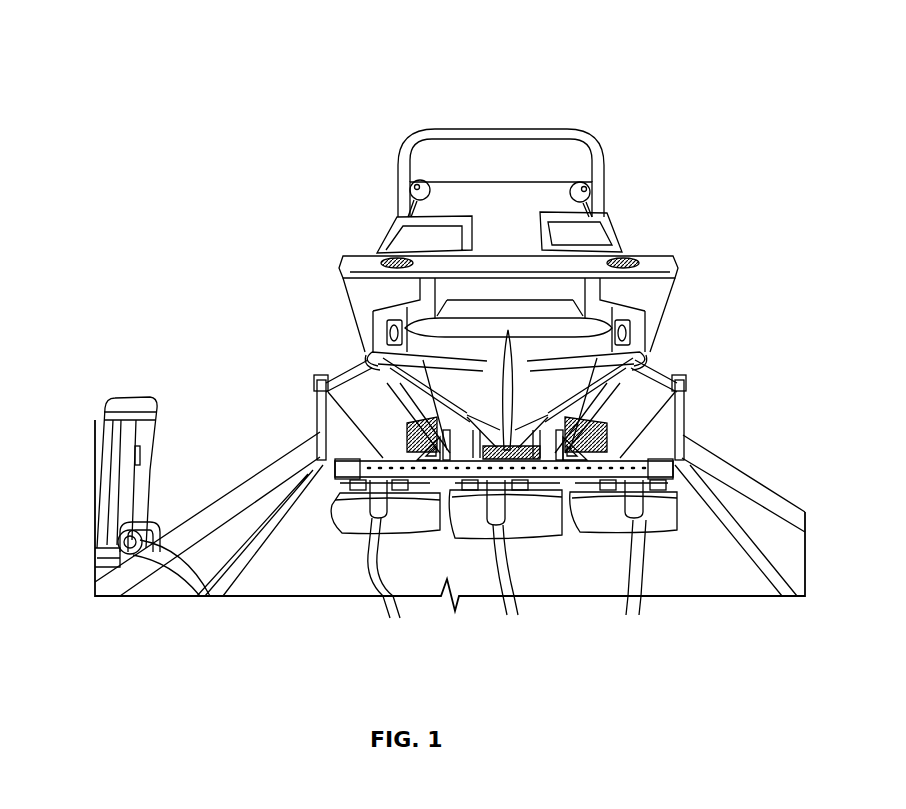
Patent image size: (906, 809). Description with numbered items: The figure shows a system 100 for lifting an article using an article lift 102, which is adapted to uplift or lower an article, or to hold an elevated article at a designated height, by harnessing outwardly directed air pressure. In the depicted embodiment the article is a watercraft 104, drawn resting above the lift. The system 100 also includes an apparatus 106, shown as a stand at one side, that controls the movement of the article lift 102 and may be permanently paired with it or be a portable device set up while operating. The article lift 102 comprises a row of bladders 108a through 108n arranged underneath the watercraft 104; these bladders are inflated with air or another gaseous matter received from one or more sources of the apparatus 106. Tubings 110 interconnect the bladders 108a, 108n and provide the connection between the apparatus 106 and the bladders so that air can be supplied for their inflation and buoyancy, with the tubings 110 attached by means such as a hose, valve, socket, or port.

The system 100 is at (128, 58).
The article lift 102 is at (340, 508).
The watercraft 104 is at (415, 136).
The apparatus 106 is at (95, 576).
The bladder 108a is at (417, 520).
The bladder 108n is at (600, 527).
The tubings 110 is at (647, 557).